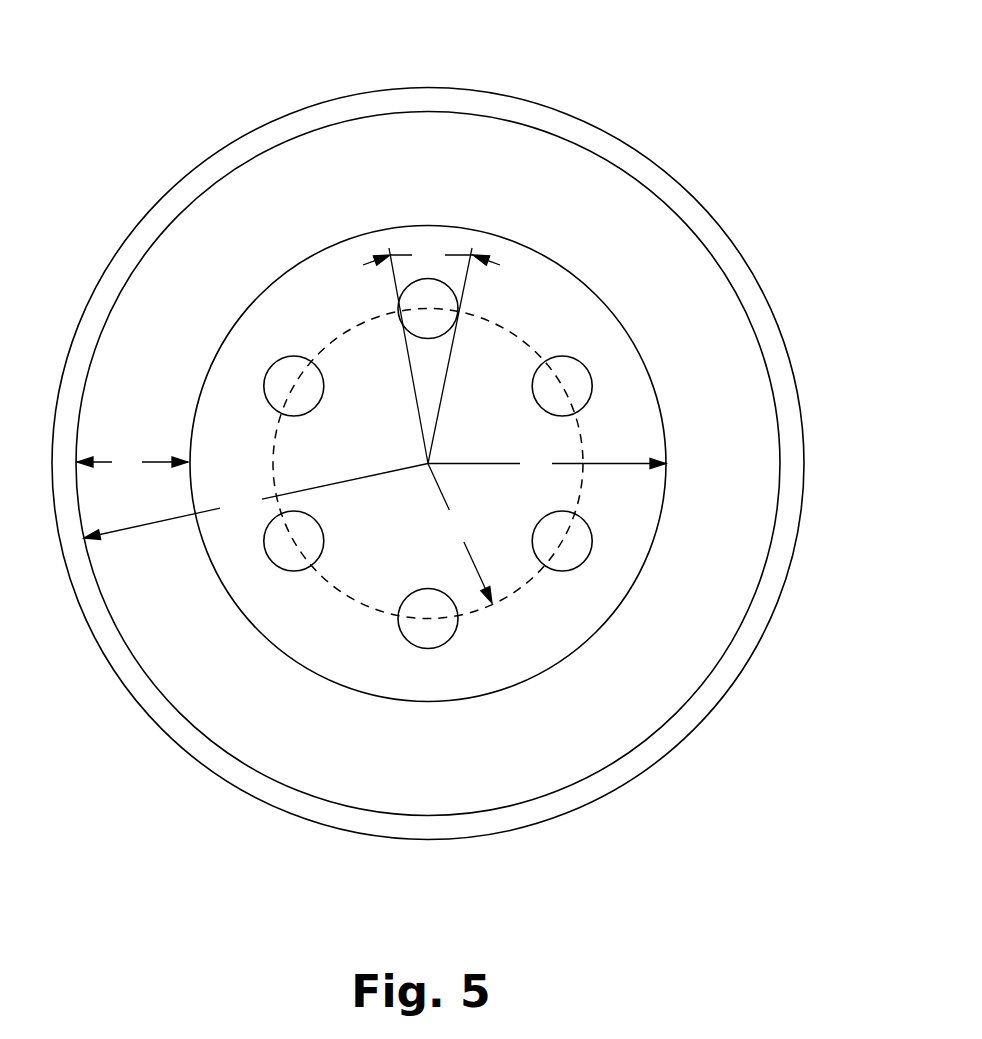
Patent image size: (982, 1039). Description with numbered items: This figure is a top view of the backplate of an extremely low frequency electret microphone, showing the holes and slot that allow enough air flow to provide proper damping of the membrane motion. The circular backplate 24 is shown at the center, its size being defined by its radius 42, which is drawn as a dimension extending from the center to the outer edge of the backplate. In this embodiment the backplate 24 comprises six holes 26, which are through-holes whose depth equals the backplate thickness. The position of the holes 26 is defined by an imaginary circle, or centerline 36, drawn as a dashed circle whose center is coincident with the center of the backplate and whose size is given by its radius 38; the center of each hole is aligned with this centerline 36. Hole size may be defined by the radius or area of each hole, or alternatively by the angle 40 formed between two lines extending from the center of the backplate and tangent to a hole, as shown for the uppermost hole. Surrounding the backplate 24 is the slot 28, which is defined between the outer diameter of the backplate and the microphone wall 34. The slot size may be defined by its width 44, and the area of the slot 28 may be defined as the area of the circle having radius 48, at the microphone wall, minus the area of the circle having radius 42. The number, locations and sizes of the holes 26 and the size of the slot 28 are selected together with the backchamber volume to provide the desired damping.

The backplate 24 is at (535, 270).
The holes 26 is at (572, 375).
The slot 28 is at (555, 172).
The microphone wall 34 is at (532, 117).
The imaginary circle (centerline) 36 is at (530, 348).
The radius of centerline 38 is at (460, 534).
The angle 40 is at (431, 353).
The backplate radius 42 is at (547, 463).
The slot width 44 is at (132, 462).
The radius of circle bounding slot 48 is at (256, 502).